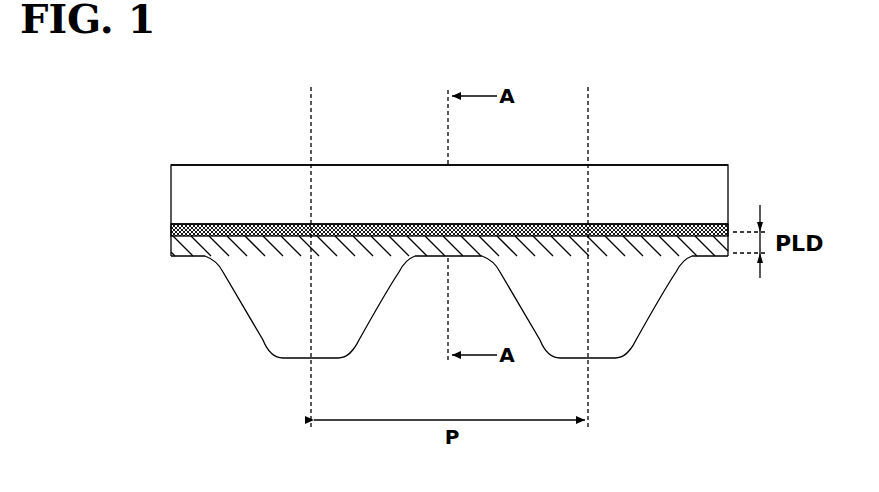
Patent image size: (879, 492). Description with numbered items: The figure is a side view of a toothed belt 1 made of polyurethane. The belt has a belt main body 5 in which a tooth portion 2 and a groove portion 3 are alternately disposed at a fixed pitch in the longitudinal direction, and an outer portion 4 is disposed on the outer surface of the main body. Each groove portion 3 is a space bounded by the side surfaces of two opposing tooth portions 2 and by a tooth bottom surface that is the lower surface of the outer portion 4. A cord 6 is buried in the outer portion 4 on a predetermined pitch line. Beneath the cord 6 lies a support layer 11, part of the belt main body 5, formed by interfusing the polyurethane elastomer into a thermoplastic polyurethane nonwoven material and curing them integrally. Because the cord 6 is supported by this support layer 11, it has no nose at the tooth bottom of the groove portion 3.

The toothed belt 1 is at (412, 222).
The tooth portion 2 is at (296, 361).
The groove portion 3 is at (427, 258).
The outer portion 4 is at (163, 165).
The belt main body 5 is at (130, 197).
The cord 6 is at (232, 224).
The support layer 11 is at (660, 228).